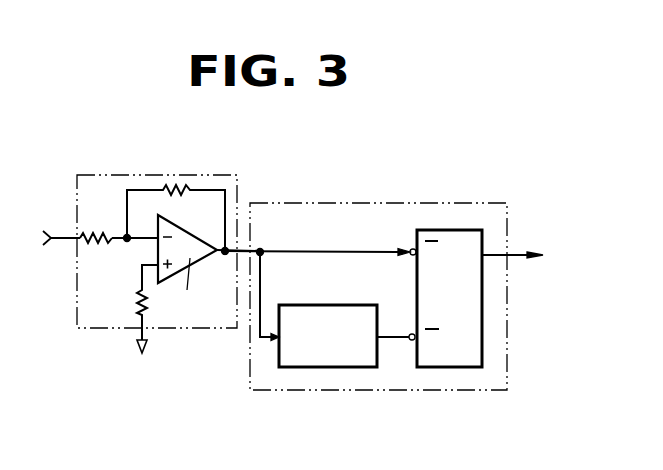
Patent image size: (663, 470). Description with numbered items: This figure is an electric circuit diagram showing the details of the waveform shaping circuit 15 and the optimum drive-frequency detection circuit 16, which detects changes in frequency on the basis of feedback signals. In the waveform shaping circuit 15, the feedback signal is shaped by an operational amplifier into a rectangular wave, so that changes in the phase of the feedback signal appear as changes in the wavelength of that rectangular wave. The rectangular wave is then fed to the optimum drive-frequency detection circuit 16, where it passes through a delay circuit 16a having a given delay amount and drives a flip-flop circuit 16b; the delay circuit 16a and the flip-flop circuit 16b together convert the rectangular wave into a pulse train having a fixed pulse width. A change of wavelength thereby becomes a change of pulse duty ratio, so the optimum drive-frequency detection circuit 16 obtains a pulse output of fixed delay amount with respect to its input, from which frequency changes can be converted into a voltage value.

The waveform shaping circuit 15 is at (108, 198).
The optimum drive-frequency detection circuit 16 is at (375, 215).
The delay circuit 16a is at (335, 307).
The flip-flop circuit 16b is at (462, 230).